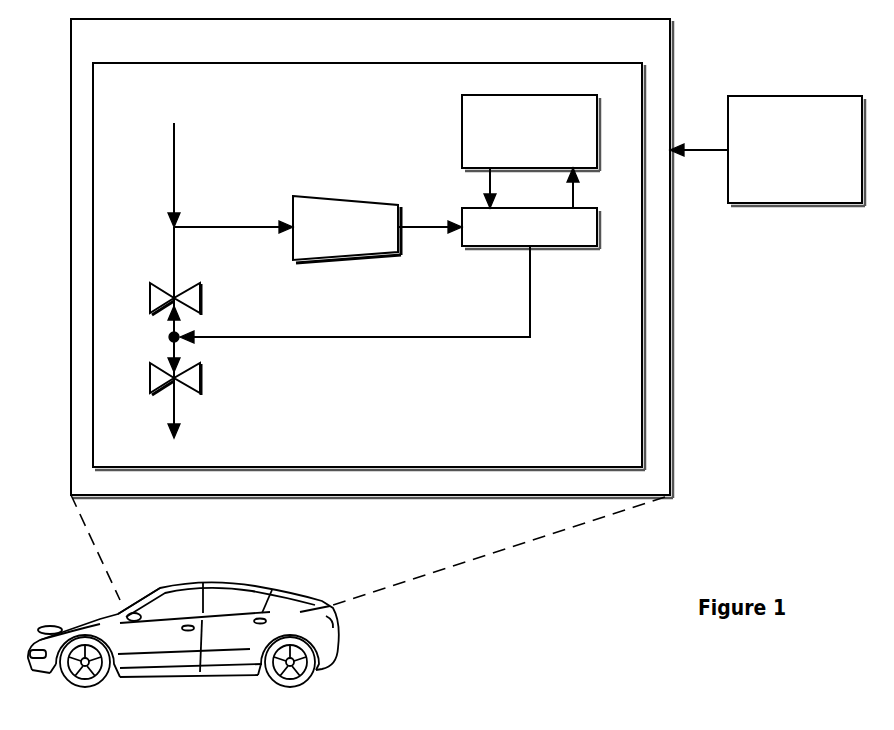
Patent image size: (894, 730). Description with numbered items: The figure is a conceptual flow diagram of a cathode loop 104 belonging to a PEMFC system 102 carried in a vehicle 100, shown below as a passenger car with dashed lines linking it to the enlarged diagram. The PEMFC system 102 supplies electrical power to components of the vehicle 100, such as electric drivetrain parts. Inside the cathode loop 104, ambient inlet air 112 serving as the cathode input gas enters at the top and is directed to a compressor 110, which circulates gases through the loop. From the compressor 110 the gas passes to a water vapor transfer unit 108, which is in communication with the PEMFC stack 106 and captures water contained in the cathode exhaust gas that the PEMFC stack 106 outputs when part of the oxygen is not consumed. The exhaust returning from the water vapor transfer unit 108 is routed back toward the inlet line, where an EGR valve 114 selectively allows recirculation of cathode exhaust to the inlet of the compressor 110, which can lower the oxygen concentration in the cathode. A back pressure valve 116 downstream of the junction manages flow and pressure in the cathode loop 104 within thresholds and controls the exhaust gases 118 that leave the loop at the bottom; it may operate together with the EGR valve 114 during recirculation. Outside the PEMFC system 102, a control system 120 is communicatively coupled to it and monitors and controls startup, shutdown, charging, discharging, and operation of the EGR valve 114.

The vehicle 100 is at (100, 611).
The PEMFC system 102 is at (108, 46).
The cathode loop 104 is at (129, 90).
The PEMFC stack 106 is at (543, 140).
The water vapor transfer unit 108 is at (543, 238).
The compressor 110 is at (360, 236).
The ambient inlet air 112 is at (174, 143).
The EGR valve 114 is at (152, 303).
The back pressure valve 116 is at (152, 378).
The exhaust gases 118 is at (174, 400).
The control system 120 is at (808, 160).